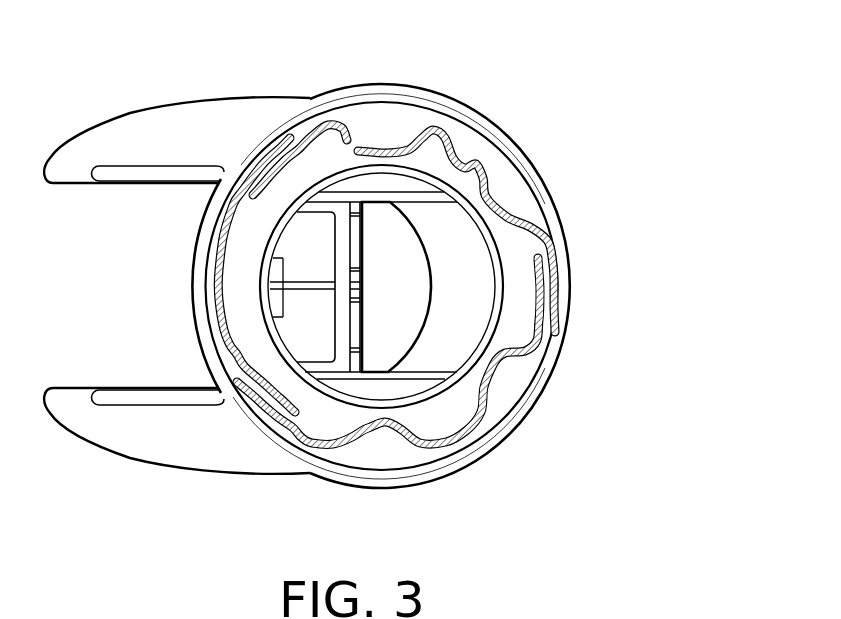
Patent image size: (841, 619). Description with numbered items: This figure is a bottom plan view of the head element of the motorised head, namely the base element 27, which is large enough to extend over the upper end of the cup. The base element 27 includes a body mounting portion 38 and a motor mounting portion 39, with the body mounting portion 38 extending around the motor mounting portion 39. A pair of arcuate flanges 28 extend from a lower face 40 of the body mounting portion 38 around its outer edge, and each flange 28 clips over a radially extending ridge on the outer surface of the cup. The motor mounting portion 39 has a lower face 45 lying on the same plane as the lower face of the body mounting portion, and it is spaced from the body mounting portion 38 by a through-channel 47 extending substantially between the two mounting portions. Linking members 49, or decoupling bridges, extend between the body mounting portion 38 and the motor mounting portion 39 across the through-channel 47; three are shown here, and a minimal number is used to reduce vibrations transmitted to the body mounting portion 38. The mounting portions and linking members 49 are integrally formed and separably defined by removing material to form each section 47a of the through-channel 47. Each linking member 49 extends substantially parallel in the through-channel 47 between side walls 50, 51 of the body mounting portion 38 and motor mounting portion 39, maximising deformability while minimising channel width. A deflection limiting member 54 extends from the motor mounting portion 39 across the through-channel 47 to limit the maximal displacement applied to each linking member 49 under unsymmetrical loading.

The base element 27 is at (650, 88).
The arcuate flanges 28 is at (416, 288).
The body mounting portion 38 is at (506, 197).
The motor mounting portion 39 is at (252, 283).
The lower face 40 is at (387, 118).
The lower face 45 is at (490, 416).
The through-channel 47 is at (490, 372).
The section of the through-channel 47a is at (443, 128).
The linking members 49 is at (274, 140).
The side wall 50 is at (364, 440).
The side wall 51 is at (339, 447).
The deflection limiting member 54 is at (353, 140).